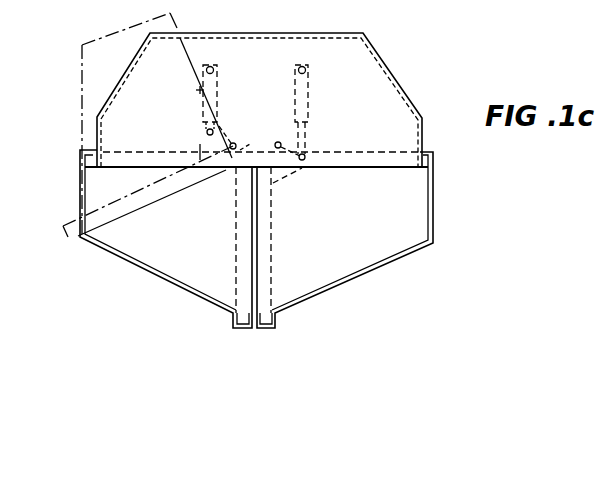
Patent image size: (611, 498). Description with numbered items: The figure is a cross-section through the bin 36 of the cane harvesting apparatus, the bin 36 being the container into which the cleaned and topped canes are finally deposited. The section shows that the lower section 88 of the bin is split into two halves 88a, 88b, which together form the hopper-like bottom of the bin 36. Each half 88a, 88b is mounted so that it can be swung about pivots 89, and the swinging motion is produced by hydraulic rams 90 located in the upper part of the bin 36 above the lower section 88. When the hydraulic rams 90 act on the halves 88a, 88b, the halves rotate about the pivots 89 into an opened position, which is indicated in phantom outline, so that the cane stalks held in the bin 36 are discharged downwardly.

The bin 36 is at (404, 73).
The lower section of the bin 88 is at (288, 239).
The first half of the lower section 88a is at (155, 256).
The second half of the lower section 88b is at (386, 245).
The pivots 89 is at (276, 145).
The hydraulic rams 90 is at (295, 92).